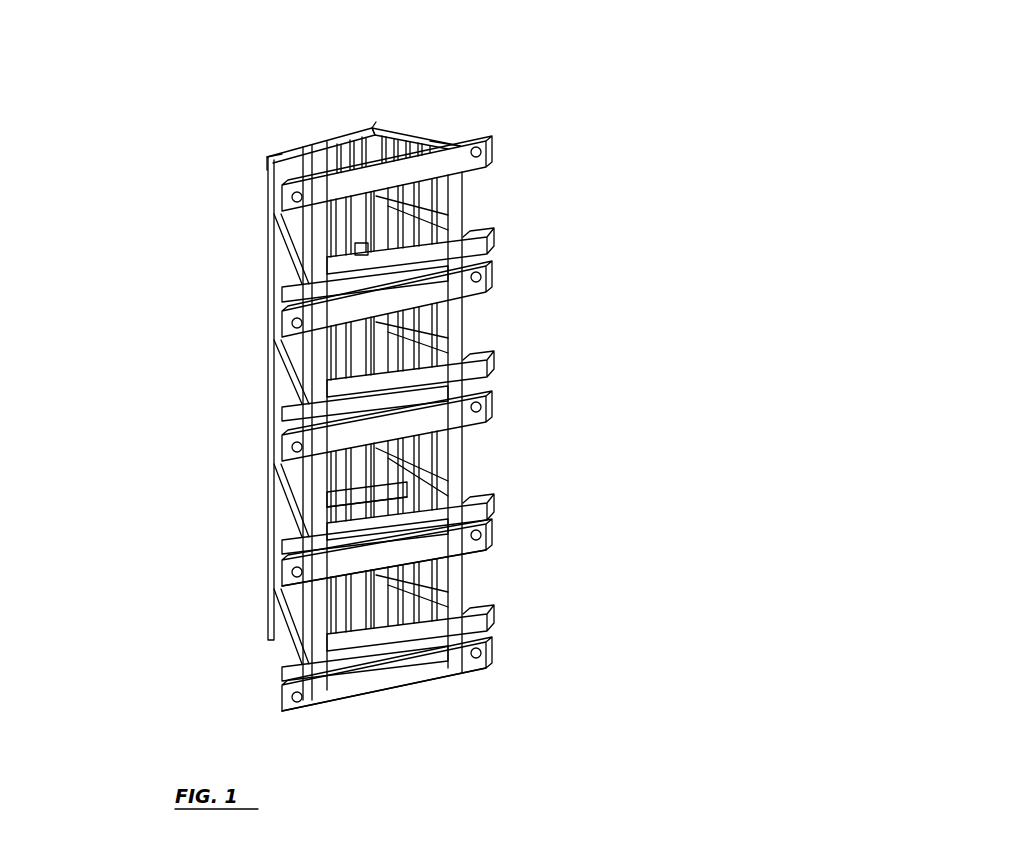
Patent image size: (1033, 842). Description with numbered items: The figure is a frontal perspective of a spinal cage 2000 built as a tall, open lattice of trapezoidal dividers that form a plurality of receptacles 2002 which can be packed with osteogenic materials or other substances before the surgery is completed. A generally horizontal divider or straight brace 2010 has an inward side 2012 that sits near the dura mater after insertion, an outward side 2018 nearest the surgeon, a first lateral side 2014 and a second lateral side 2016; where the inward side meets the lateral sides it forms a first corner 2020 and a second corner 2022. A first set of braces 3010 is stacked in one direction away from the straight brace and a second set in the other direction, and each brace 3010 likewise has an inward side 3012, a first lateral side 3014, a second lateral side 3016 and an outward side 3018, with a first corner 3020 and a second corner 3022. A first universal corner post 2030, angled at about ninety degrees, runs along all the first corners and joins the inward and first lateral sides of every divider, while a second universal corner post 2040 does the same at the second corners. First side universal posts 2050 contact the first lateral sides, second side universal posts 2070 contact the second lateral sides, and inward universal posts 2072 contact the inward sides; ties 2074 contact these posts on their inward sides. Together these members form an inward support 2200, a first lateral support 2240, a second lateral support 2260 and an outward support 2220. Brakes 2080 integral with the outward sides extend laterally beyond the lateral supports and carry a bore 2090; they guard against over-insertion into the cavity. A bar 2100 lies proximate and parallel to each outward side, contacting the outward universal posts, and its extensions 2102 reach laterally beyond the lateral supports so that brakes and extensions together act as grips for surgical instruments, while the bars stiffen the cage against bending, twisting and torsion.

The cage 2000 is at (628, 101).
The receptacles 2002 is at (615, 220).
The generally horizontal divider 2010 is at (345, 567).
The inward side 2012 is at (347, 498).
The first lateral side 2014 is at (386, 490).
The second lateral side 2016 is at (265, 521).
The outward side 2018 is at (408, 552).
The first corner 2020 is at (390, 503).
The second corner 2022 is at (268, 505).
The first universal corner post 2030 is at (385, 147).
The second universal corner post 2040 is at (262, 167).
The first side universal post 2050 is at (404, 360).
The second side universal post 2070 is at (292, 250).
The inward universal post 2072 is at (343, 152).
The ties 2074 is at (425, 212).
The brakes 2080 is at (290, 205).
The bore 2090 is at (290, 197).
The bar 2100 is at (488, 373).
The extensions 2102 is at (280, 672).
The inward support 2200 is at (318, 135).
The outward support 2220 is at (417, 724).
The first lateral support 2240 is at (427, 138).
The second lateral support 2260 is at (271, 156).
The braces 3010 is at (325, 195).
The inward side 3012 is at (360, 248).
The first lateral side 3014 is at (384, 612).
The second lateral side 3016 is at (265, 640).
The outward side 3018 is at (400, 297).
The first corner 3020 is at (380, 125).
The second corner 3022 is at (265, 284).